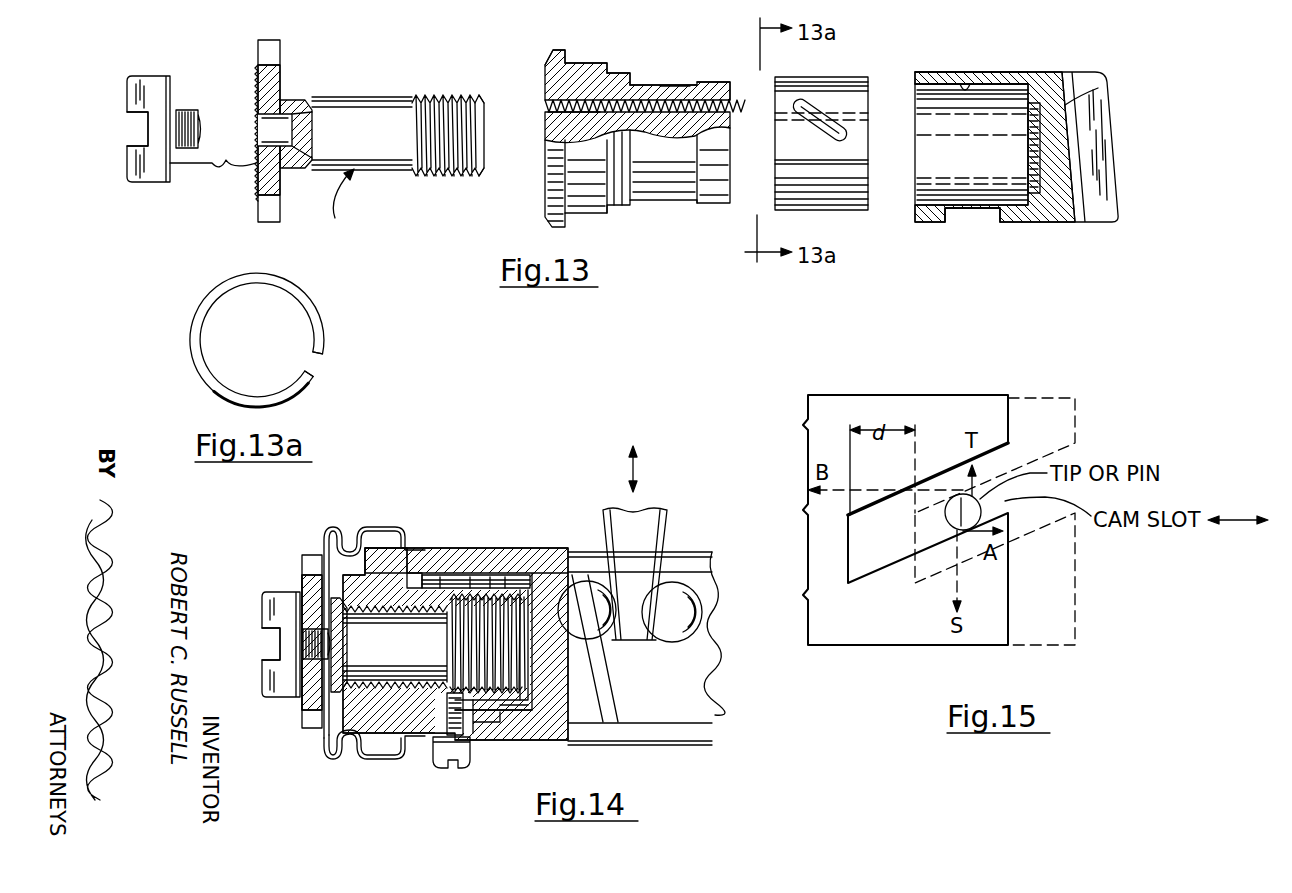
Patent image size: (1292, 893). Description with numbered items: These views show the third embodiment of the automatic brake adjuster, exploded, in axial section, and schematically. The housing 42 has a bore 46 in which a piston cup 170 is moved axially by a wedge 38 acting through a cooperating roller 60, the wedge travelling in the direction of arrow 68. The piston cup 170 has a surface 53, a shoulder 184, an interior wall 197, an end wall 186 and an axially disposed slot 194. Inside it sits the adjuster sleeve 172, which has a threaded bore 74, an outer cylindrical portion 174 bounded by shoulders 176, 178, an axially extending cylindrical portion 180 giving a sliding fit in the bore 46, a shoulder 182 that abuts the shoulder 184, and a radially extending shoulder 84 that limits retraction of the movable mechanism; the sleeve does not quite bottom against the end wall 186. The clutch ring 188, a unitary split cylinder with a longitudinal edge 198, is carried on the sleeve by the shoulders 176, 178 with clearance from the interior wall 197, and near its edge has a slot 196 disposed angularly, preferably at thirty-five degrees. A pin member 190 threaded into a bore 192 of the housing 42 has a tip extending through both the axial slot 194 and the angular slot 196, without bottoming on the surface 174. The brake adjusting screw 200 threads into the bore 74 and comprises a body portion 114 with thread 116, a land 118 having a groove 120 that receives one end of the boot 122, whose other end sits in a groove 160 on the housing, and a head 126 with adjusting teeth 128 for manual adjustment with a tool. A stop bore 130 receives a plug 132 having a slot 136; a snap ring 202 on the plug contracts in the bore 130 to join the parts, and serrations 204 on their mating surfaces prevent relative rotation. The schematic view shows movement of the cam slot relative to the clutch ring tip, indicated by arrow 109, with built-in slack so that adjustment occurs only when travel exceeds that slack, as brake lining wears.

In FIG. 13, the teeth 128 is at (272, 50).
In FIG. 14, the teeth 128 is at (314, 556).
In FIG. 13, the plug 132 is at (157, 78).
In FIG. 14, the plug 132 is at (266, 594).
In FIG. 13, the slot 136 is at (128, 141).
In FIG. 14, the slot 136 is at (263, 650).
In FIG. 13, the head 126 is at (258, 75).
In FIG. 14, the head 126 is at (307, 580).
In FIG. 13, the groove 120 is at (284, 100).
In FIG. 13, the bore 130 is at (270, 124).
In FIG. 13, the land 118 is at (362, 97).
In FIG. 13, the thread 116 is at (414, 95).
In FIG. 13, the body portion 114 is at (448, 96).
In FIG. 13, the snap ring 202 is at (192, 100).
In FIG. 13, the serrations 204 is at (213, 177).
In FIG. 13, the brake adjusting screw 200 is at (371, 139).
In FIG. 13, the shoulder 84 is at (573, 55).
In FIG. 13, the cylindrical portion 180 is at (585, 63).
In FIG. 14, the cylindrical portion 180 is at (388, 548).
In FIG. 13, the shoulder 182 is at (608, 73).
In FIG. 13, the shoulder 178 is at (632, 85).
In FIG. 14, the shoulder 178 is at (458, 575).
In FIG. 13, the outer cylindrical portion 174 is at (672, 85).
In FIG. 13, the shoulder 176 is at (700, 82).
In FIG. 14, the shoulder 176 is at (521, 585).
In FIG. 13, the threaded bore 74 is at (548, 115).
In FIG. 13, the adjuster sleeve 172 is at (660, 206).
In FIG. 13, the slot 196 is at (816, 105).
In FIG. 14, the slot 196 is at (522, 715).
In FIG. 13, the clutch ring 188 is at (840, 214).
In FIG. 13A, the clutch ring 188 is at (324, 300).
In FIG. 13A, the longitudinal edge 198 is at (318, 357).
In FIG. 13, the shoulder 184 is at (916, 74).
In FIG. 13, the interior wall 197 is at (966, 85).
In FIG. 14, the interior wall 197 is at (490, 588).
In FIG. 13, the piston cup 170 is at (1009, 70).
In FIG. 13, the surface 53 is at (1098, 88).
In FIG. 13, the end wall 186 is at (1034, 165).
In FIG. 13, the slot 194 is at (968, 210).
In FIG. 14, the slot 194 is at (480, 720).
In FIG. 14, the boot 122 is at (350, 527).
In FIG. 14, the bore 46 is at (443, 573).
In FIG. 14, the housing 42 is at (518, 546).
In FIG. 14, the groove 160 is at (412, 562).
In FIG. 14, the pin member 190 is at (440, 766).
In FIG. 14, the threaded bore 192 is at (446, 736).
In FIG. 14, the roller 60 is at (668, 642).
In FIG. 14, the wedge 38 is at (671, 521).
In FIG. 14, the direction of movement 68 is at (643, 466).
In FIG. 15, the arrow 109 is at (1236, 518).